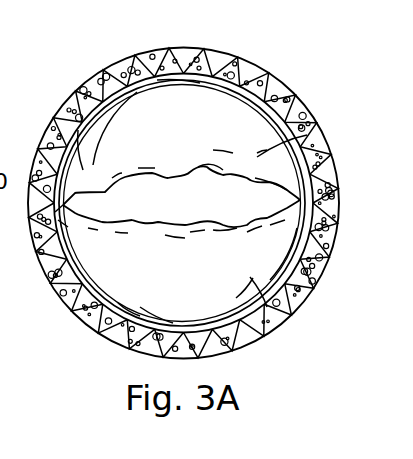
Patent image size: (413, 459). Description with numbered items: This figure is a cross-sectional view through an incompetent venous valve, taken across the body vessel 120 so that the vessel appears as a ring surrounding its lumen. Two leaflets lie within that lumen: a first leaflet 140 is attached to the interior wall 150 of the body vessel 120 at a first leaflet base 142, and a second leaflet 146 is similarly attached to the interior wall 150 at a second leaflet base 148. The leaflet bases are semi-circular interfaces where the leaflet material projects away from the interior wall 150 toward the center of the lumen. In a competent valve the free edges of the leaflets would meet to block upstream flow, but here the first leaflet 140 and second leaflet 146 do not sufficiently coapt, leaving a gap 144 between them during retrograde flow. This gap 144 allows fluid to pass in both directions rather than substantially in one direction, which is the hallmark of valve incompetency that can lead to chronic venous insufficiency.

The body vessel 120 is at (335, 235).
The first leaflet 140 is at (320, 128).
The first leaflet base 142 is at (287, 95).
The gap 144 is at (243, 205).
The second leaflet 146 is at (247, 278).
The second leaflet base 148 is at (280, 322).
The interior wall 150 is at (338, 165).